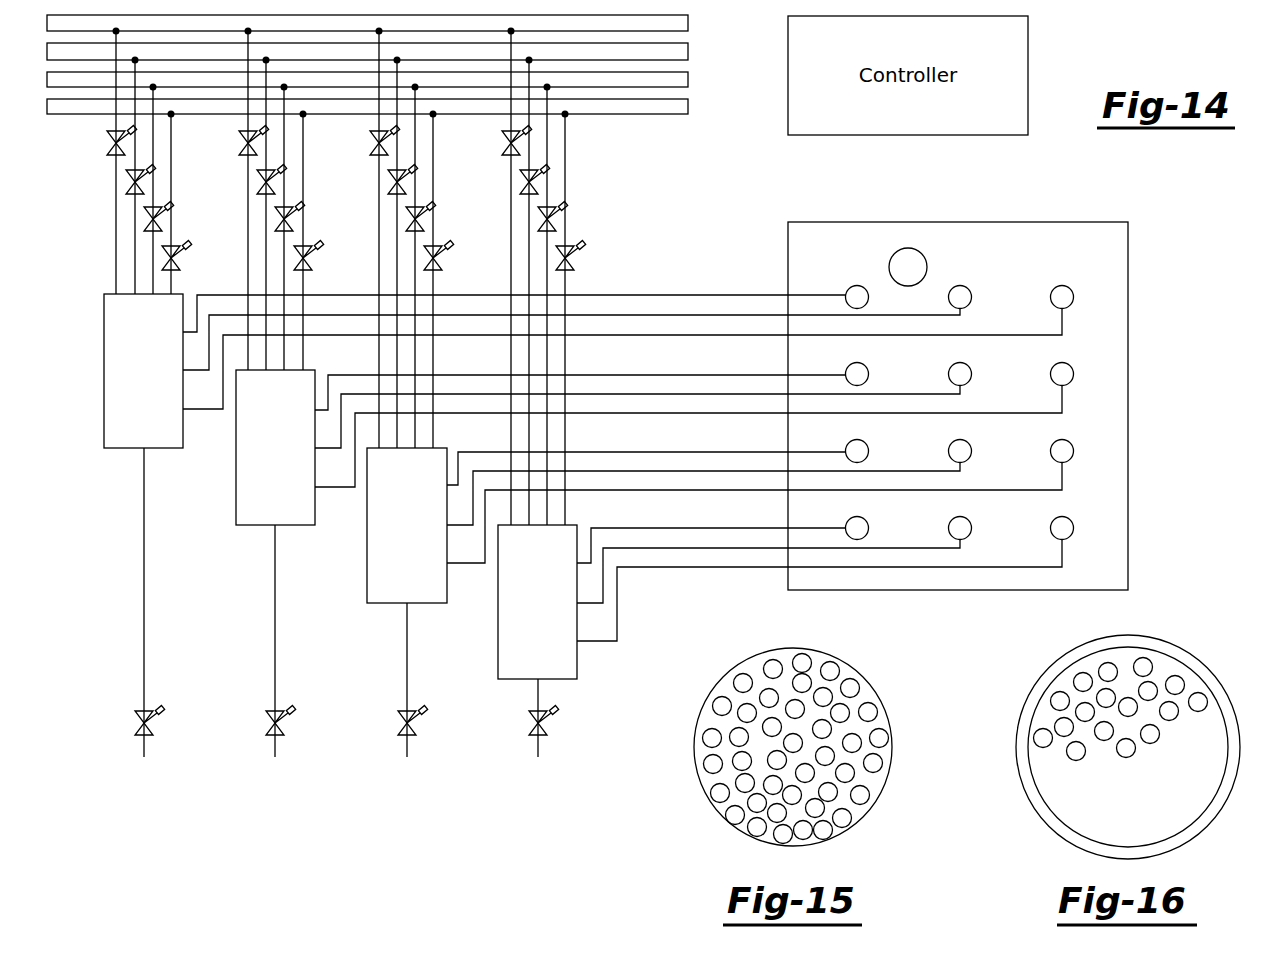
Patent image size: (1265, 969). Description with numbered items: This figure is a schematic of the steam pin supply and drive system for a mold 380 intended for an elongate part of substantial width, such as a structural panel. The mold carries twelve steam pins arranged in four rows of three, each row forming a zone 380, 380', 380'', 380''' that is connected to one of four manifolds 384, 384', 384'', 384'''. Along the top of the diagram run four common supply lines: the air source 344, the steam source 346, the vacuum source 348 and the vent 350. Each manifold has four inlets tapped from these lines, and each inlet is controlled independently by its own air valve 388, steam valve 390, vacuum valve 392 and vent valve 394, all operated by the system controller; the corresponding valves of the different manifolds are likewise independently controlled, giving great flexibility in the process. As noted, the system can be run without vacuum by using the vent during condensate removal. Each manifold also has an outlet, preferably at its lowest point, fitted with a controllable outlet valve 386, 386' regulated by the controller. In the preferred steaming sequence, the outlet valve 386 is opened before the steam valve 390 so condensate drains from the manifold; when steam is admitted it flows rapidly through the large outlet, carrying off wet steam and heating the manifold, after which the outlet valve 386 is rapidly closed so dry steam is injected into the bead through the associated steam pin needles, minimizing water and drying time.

The air source 344 is at (688, 23).
The steam source 346 is at (688, 52).
The vacuum source 348 is at (688, 80).
The vent 350 is at (688, 107).
The air valve 388 is at (530, 135).
The steam valve 390 is at (548, 174).
The vacuum valve 392 is at (566, 211).
The vent valve 394 is at (584, 250).
The mold 380 is at (991, 372).
The mold zone 380' is at (1024, 366).
The mold zone 380'' is at (1026, 443).
The mold zone 380''' is at (1028, 520).
The manifold 384 is at (524, 646).
The manifold 384' is at (392, 602).
The manifold 384'' is at (261, 563).
The manifold 384''' is at (128, 525).
The outlet valve 386 is at (558, 749).
The outlet valve 386' is at (431, 749).